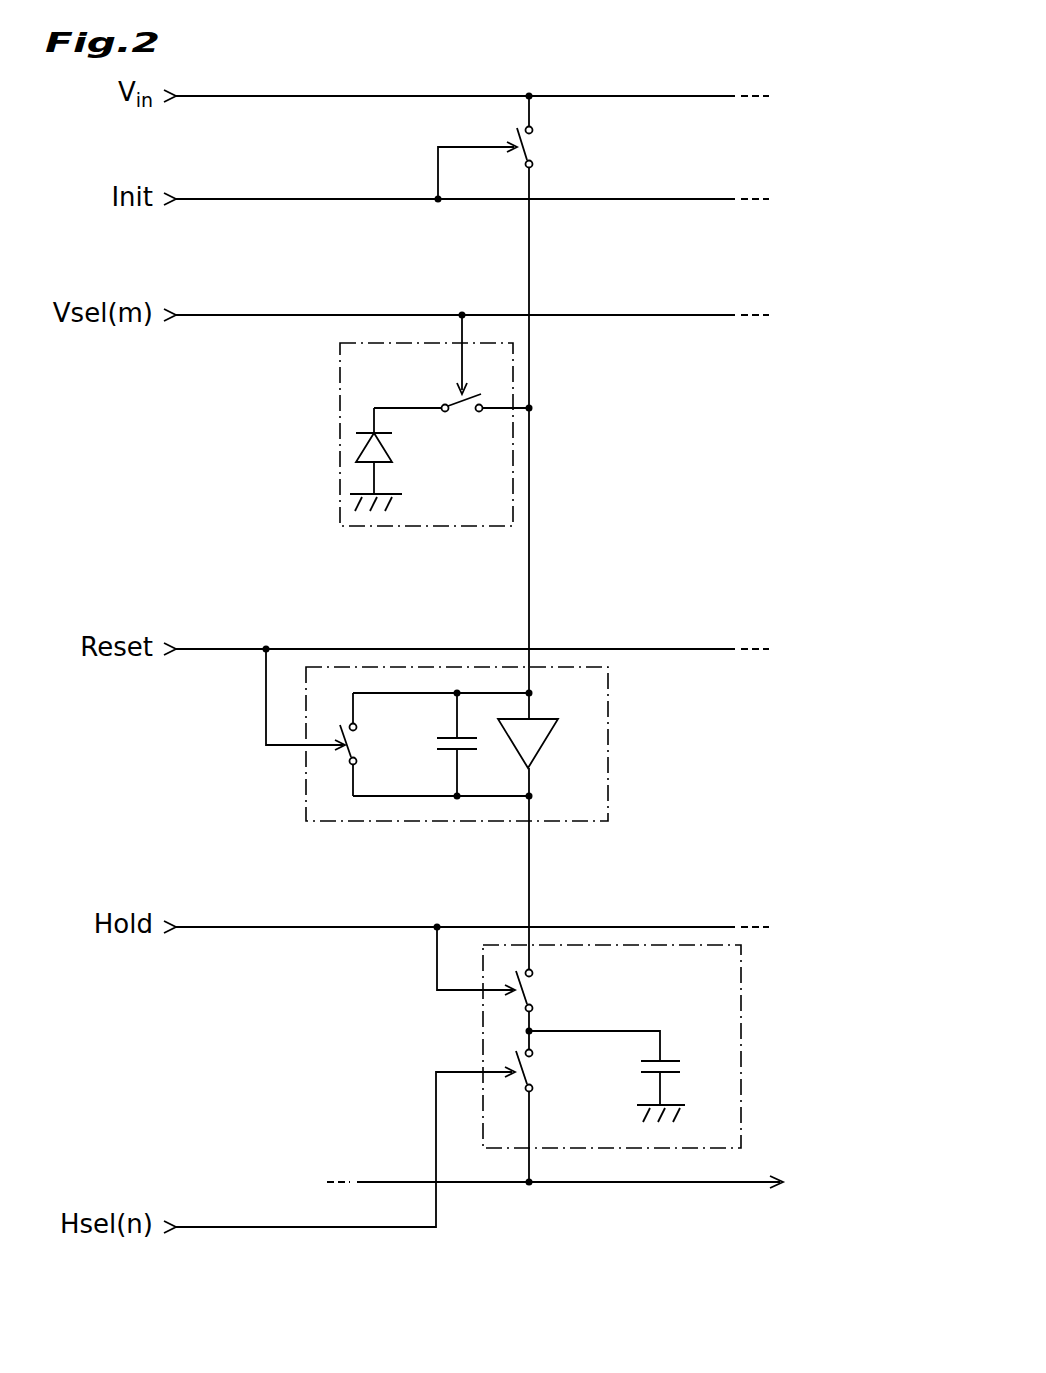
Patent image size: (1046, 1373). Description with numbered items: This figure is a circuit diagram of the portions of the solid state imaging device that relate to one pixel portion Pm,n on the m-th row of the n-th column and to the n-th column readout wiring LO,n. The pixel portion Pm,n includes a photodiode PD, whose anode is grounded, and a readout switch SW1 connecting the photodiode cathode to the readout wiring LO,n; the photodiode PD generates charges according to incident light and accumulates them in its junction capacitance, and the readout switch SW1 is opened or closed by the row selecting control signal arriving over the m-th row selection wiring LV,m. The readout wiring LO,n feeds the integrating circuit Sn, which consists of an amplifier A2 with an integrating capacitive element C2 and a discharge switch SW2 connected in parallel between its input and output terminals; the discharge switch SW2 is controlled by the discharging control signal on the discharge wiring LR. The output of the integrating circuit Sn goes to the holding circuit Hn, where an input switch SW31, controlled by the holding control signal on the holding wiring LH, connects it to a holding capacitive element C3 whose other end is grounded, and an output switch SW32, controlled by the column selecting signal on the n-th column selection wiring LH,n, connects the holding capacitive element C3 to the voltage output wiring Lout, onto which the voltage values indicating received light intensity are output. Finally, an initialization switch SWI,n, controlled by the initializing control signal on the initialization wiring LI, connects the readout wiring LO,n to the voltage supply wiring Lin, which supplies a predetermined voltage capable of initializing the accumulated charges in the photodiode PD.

The voltage supply wiring Lin is at (222, 97).
The initialization wiring LI is at (222, 200).
The n-th column readout wiring LO,n is at (529, 265).
The initialization switch SWI,n is at (523, 163).
The m-th row selection wiring LV,m is at (217, 316).
The readout switch SW1 is at (453, 384).
The photodiode PD is at (392, 459).
The pixel portion Pm,n is at (483, 527).
The discharge wiring LR is at (217, 650).
The discharge switch SW2 is at (341, 722).
The integrating capacitive element C2 is at (467, 744).
The amplifier A2 is at (537, 754).
The integrating circuit Sn is at (608, 794).
The holding wiring LH is at (237, 928).
The input switch SW31 is at (519, 969).
The output switch SW32 is at (558, 1072).
The holding capacitive element C3 is at (618, 1076).
The holding circuit Hn is at (741, 1097).
The voltage output wiring Lout is at (735, 1183).
The n-th column selection wiring LH,n is at (235, 1228).